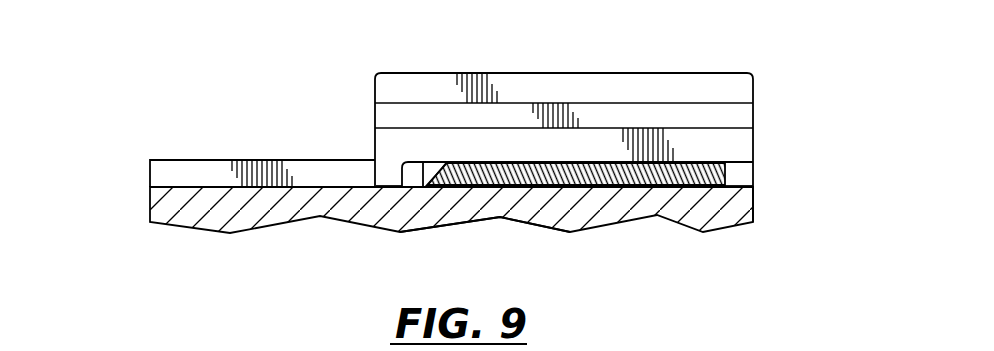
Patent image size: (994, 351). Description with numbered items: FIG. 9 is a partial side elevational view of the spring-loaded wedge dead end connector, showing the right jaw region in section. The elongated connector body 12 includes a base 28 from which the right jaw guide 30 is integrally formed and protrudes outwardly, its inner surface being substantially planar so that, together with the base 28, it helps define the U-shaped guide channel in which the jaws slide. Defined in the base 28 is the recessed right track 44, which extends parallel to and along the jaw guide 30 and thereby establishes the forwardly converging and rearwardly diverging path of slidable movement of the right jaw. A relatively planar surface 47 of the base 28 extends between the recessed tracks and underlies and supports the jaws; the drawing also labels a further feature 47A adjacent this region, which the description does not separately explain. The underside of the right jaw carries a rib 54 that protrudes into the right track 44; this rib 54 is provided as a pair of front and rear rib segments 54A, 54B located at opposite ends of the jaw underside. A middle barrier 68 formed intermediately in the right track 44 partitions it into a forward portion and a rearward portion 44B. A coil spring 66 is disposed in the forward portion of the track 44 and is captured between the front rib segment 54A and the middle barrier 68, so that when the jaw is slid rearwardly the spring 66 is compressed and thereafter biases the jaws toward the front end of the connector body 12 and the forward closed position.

The connector body 12 is at (242, 224).
The base 28 is at (500, 217).
The right jaw guide 30 is at (753, 124).
The right track 44 is at (188, 168).
The rearward portion of right track 44B is at (182, 185).
The planar surface 47 is at (253, 160).
The conductive bonding material 47A is at (650, 185).
The rib 54 is at (362, 164).
The front rib segment 54A is at (745, 184).
The rear rib segment 54B is at (393, 176).
The coil spring 66 is at (610, 184).
The middle barrier 68 is at (442, 160).